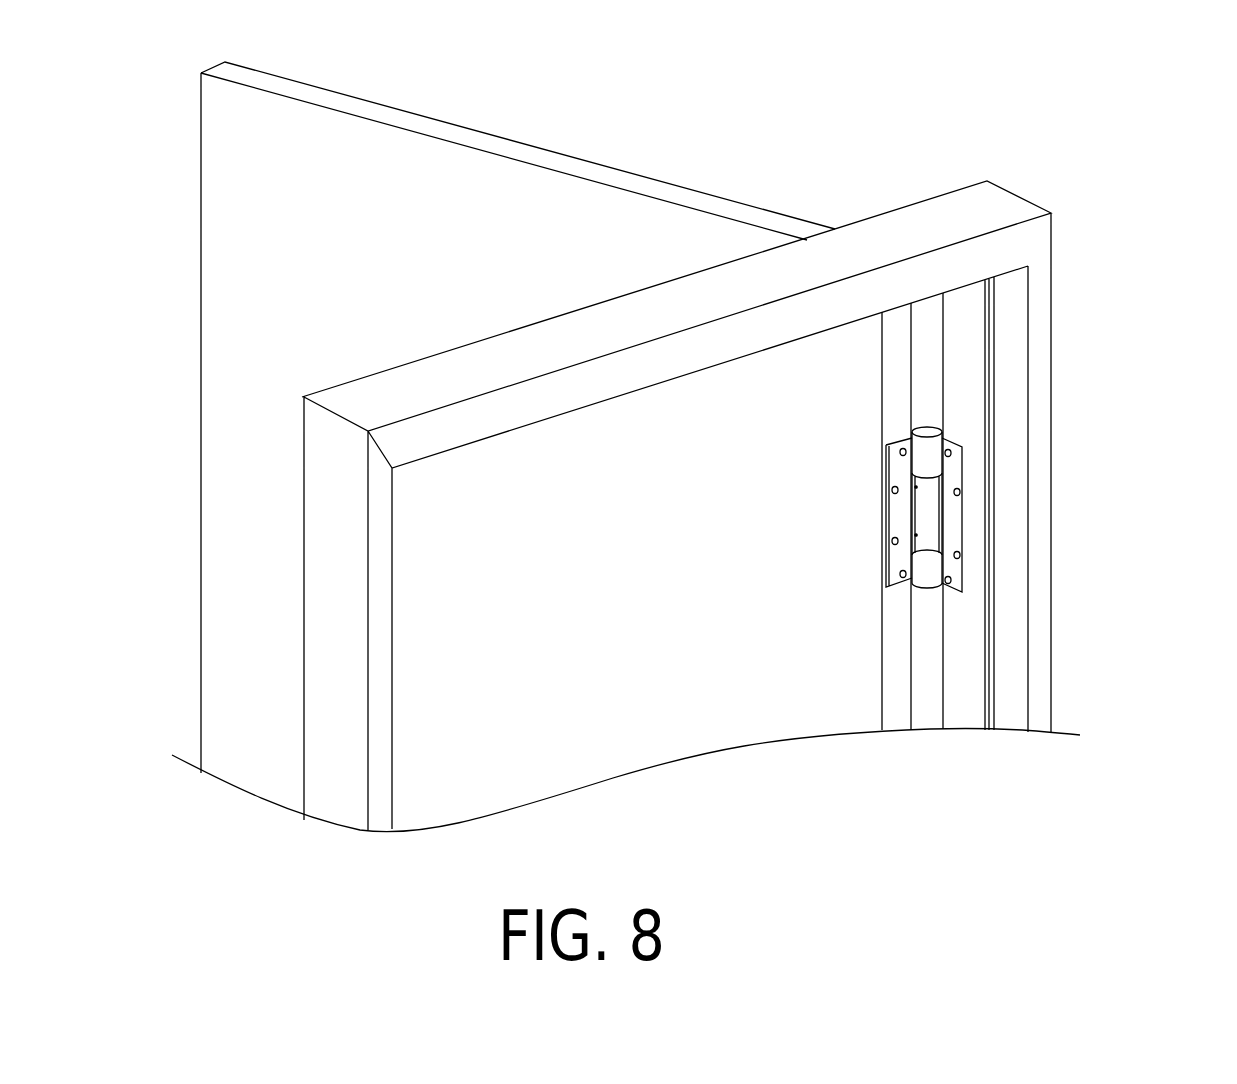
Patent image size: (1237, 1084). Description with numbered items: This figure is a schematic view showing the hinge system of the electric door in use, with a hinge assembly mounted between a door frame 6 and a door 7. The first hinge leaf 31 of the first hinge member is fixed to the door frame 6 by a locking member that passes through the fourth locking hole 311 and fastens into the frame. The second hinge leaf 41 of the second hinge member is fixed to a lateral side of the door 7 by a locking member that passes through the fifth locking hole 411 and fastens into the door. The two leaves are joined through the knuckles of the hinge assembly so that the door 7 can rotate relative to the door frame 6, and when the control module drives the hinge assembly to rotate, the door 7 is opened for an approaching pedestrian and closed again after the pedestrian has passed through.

The door frame 6 is at (963, 353).
The door 7 is at (902, 330).
The first hinge leaf 31 is at (957, 467).
The fourth locking hole 311 is at (960, 490).
The second hinge leaf 41 is at (900, 463).
The fifth locking hole 411 is at (883, 545).